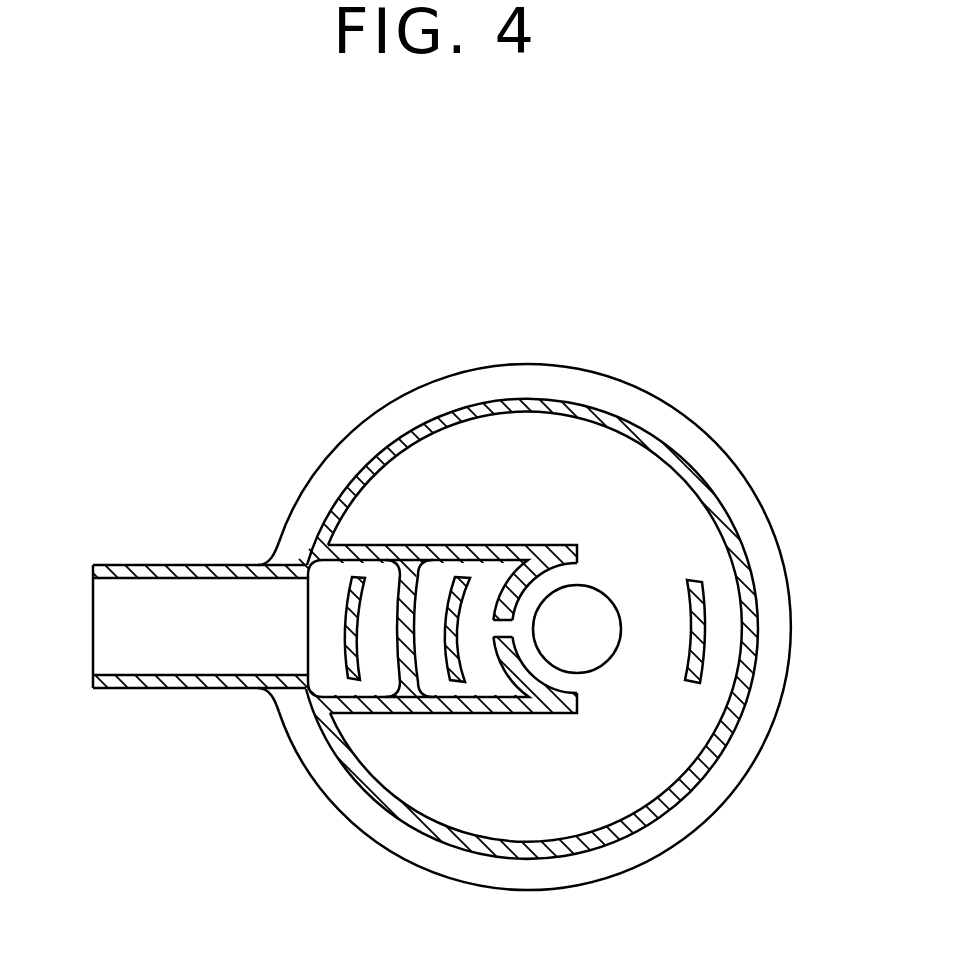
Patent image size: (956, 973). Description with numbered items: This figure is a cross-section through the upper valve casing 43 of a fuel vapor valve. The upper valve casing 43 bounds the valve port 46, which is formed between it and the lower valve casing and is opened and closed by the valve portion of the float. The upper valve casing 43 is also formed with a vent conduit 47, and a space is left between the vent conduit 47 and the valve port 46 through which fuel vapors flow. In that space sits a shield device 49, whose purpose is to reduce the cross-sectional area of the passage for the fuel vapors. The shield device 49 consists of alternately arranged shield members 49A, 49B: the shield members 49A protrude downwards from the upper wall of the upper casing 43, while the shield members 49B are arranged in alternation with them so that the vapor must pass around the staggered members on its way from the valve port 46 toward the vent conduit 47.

The upper valve casing 43 is at (678, 460).
The valve port 46 is at (597, 607).
The vent conduit 47 is at (155, 580).
The shield device 49 is at (430, 517).
The shield member 49A is at (455, 640).
The shield member 49B is at (511, 662).